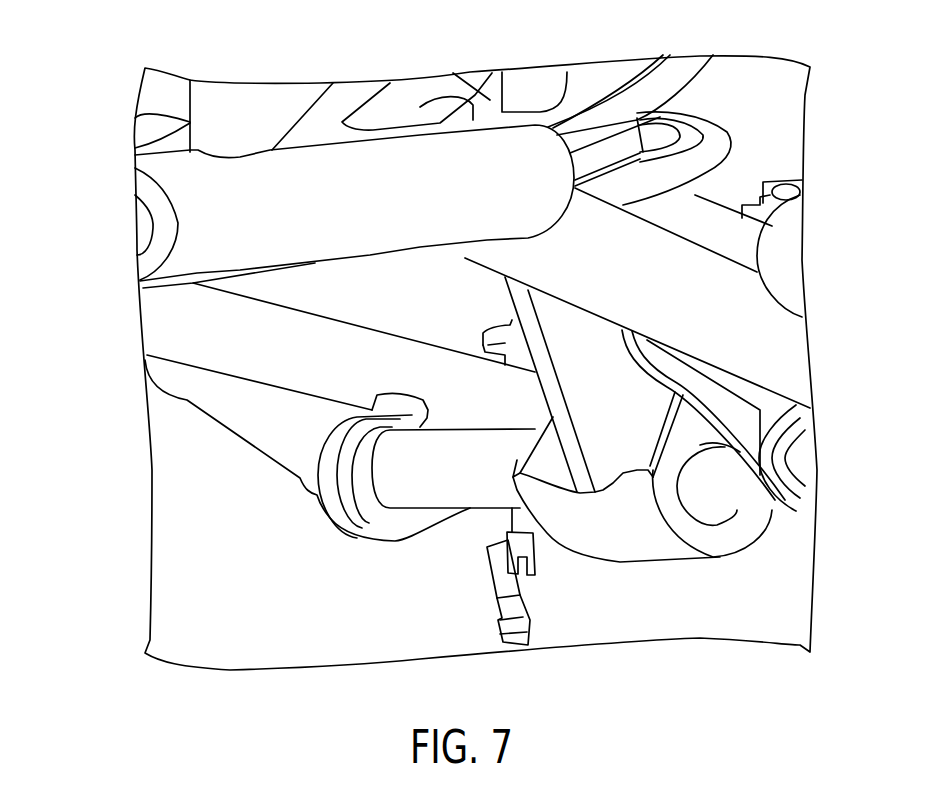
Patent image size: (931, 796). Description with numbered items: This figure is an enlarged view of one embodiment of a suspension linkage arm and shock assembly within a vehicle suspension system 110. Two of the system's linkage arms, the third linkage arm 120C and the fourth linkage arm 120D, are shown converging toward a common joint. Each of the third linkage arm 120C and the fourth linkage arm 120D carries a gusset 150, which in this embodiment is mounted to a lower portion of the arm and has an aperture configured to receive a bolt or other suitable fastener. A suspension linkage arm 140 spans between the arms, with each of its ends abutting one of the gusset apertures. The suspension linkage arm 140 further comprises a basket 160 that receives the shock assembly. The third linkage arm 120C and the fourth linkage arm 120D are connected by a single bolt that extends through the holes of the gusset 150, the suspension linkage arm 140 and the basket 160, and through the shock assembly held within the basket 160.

The suspension system 110 is at (118, 80).
The third linkage arm 120C is at (148, 323).
The fourth linkage arm 120D is at (792, 355).
The suspension linkage arm 140 is at (468, 497).
The gusset 150 is at (248, 423).
The basket 160 is at (593, 565).